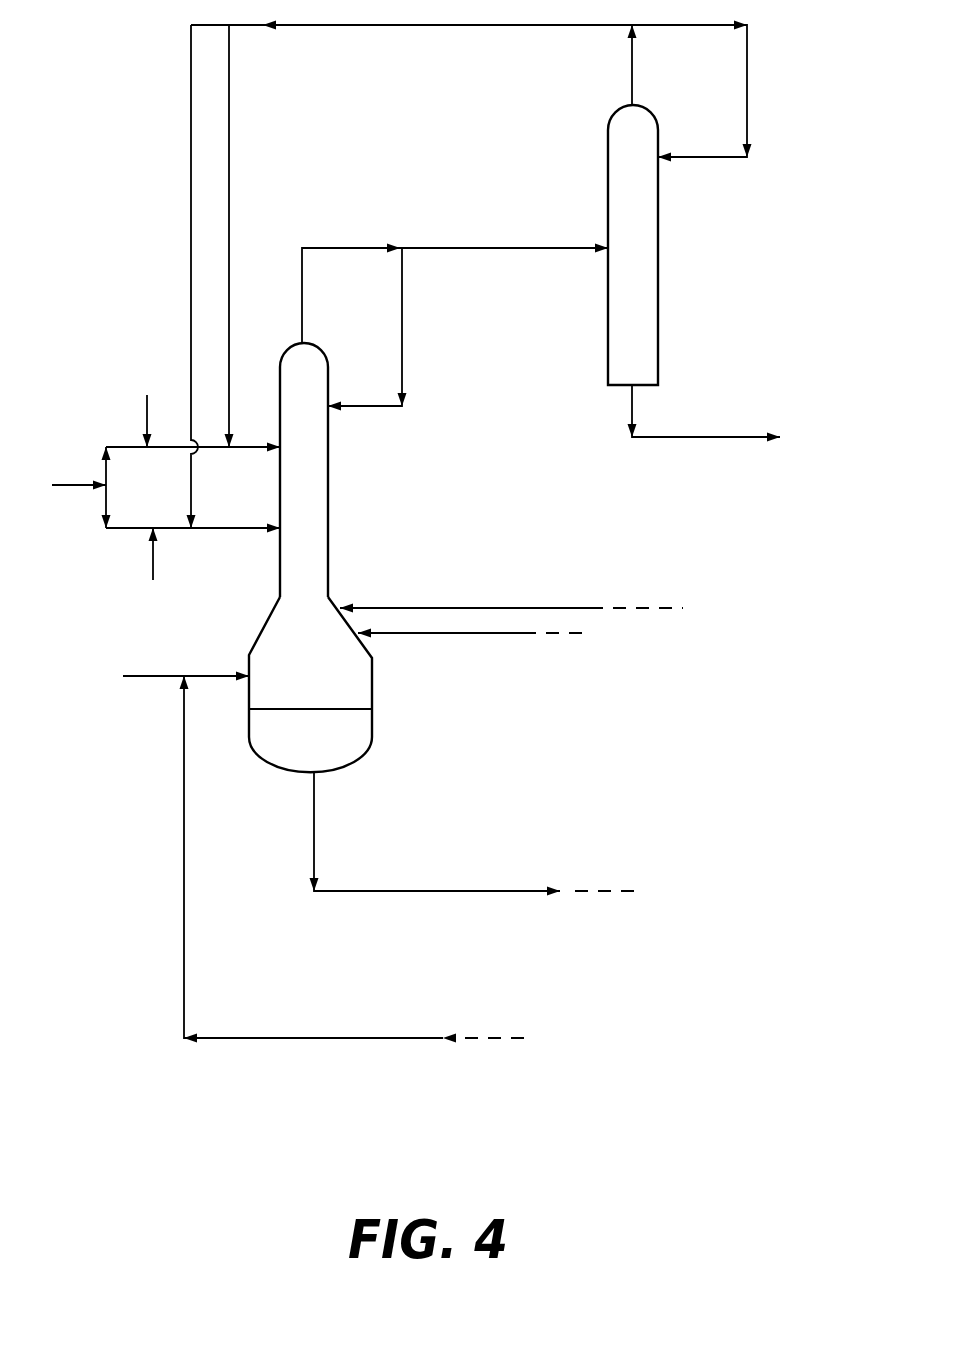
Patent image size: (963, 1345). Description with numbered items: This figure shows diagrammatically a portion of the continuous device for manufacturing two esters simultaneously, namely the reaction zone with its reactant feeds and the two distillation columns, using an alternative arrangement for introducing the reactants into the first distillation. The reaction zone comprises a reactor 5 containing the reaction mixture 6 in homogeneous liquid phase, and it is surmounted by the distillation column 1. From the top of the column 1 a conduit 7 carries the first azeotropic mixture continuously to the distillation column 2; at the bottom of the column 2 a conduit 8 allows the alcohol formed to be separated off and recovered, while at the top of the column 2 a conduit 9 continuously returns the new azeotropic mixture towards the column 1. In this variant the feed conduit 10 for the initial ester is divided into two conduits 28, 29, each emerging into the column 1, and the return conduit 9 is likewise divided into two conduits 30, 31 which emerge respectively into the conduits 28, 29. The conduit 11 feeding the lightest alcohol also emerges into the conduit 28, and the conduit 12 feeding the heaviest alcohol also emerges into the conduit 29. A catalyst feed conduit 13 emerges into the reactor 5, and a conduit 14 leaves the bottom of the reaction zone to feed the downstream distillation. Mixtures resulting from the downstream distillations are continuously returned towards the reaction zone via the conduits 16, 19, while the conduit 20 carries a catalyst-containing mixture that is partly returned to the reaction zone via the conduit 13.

The distillation (D1) column 1 is at (328, 460).
The distillation (D2) column 2 is at (608, 326).
The reactor 5 is at (372, 690).
The reaction mixture 6 is at (293, 763).
The conduit 7 is at (522, 248).
The conduit 8 is at (688, 437).
The conduit 9 is at (502, 25).
The feed conduit 10 is at (72, 485).
The conduit 11 is at (152, 557).
The conduit 12 is at (145, 418).
The catalyst feed conduit 13 is at (140, 678).
The conduit 14 is at (403, 891).
The conduit 16 is at (465, 633).
The conduit 19 is at (503, 608).
The conduit 20 is at (335, 1038).
The conduit 28 is at (243, 530).
The conduit 29 is at (243, 445).
The conduit 30 is at (189, 135).
The conduit 31 is at (229, 173).